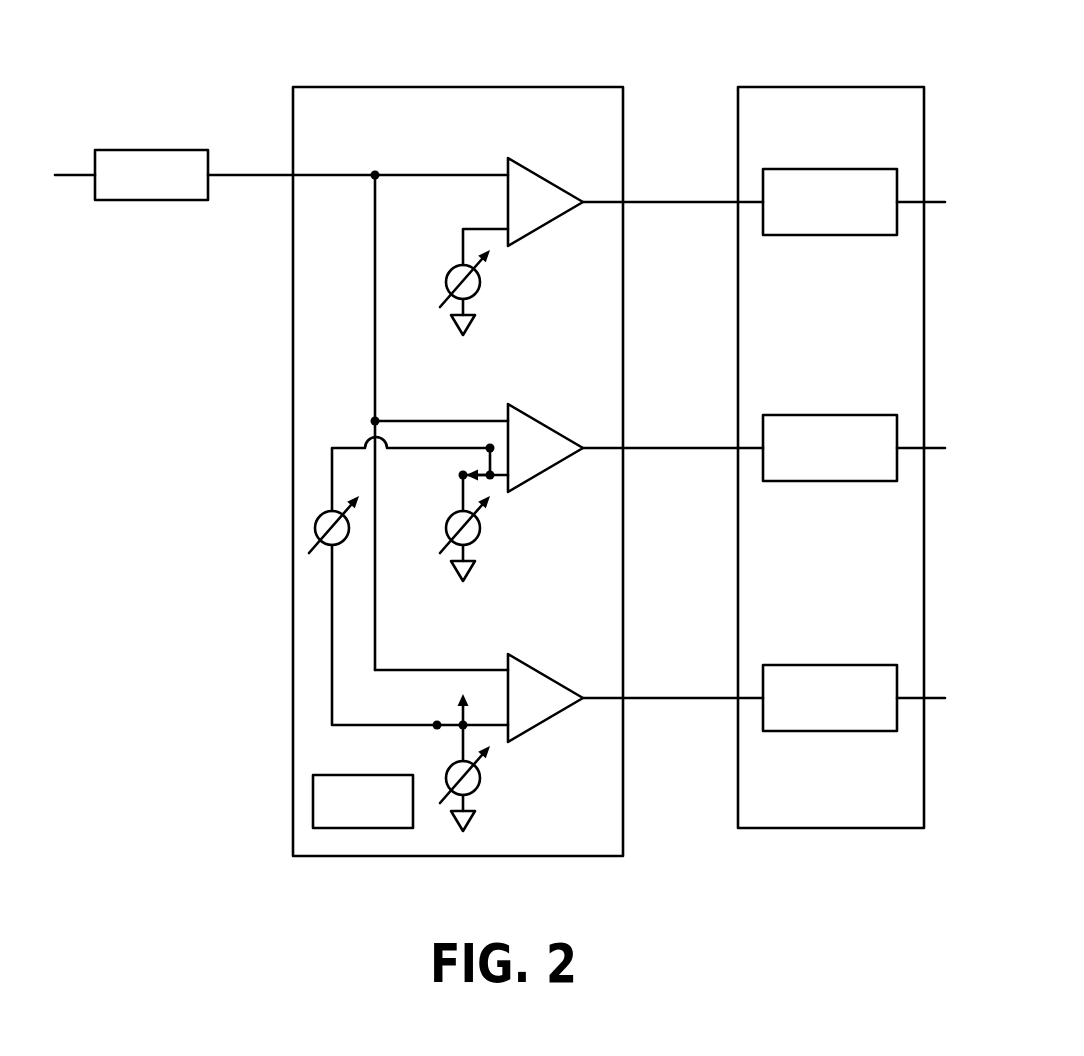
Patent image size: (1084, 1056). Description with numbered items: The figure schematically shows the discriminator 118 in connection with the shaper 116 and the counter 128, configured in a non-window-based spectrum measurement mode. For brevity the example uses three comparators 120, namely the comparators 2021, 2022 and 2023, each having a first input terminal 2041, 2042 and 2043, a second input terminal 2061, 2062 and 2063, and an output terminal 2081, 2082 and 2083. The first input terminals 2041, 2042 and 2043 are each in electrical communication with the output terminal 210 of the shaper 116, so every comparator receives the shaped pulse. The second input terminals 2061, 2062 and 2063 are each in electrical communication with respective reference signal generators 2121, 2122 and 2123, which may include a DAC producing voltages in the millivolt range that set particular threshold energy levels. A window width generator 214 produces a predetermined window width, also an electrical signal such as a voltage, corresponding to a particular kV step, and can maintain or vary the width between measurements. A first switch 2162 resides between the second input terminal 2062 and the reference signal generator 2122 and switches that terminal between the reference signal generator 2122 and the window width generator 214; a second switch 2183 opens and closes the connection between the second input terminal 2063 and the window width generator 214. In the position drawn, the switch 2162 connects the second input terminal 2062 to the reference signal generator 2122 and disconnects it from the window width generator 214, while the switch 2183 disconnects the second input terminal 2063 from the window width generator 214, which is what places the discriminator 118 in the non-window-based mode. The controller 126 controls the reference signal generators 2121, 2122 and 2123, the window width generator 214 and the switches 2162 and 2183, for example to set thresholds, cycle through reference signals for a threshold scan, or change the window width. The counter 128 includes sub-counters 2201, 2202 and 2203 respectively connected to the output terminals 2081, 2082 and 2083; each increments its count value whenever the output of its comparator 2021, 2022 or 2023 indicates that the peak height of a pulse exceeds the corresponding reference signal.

The shaper 116 is at (155, 150).
The output terminal of the shaper 210 is at (212, 178).
The discriminator 118 is at (447, 87).
The comparators 120 is at (584, 102).
The counter 128 is at (823, 87).
The controller 126 is at (313, 800).
The first comparator 2021 is at (537, 174).
The second comparator 2022 is at (537, 420).
The third comparator 2023 is at (537, 670).
The first input terminal 2041 is at (506, 172).
The first input terminal 2042 is at (506, 418).
The first input terminal 2043 is at (506, 668).
The second input terminal 2061 is at (506, 226).
The second input terminal 2062 is at (517, 487).
The second input terminal 2063 is at (517, 737).
The output terminal 2081 is at (612, 204).
The output terminal 2082 is at (612, 450).
The output terminal 2083 is at (612, 700).
The reference signal generator 2121 is at (480, 283).
The reference signal generator 2122 is at (480, 530).
The reference signal generator 2123 is at (480, 780).
The window width generator 214 is at (316, 528).
The first switch 2162 is at (484, 481).
The second switch 2183 is at (458, 708).
The sub-counter 2201 is at (831, 237).
The sub-counter 2202 is at (831, 483).
The sub-counter 2203 is at (831, 733).